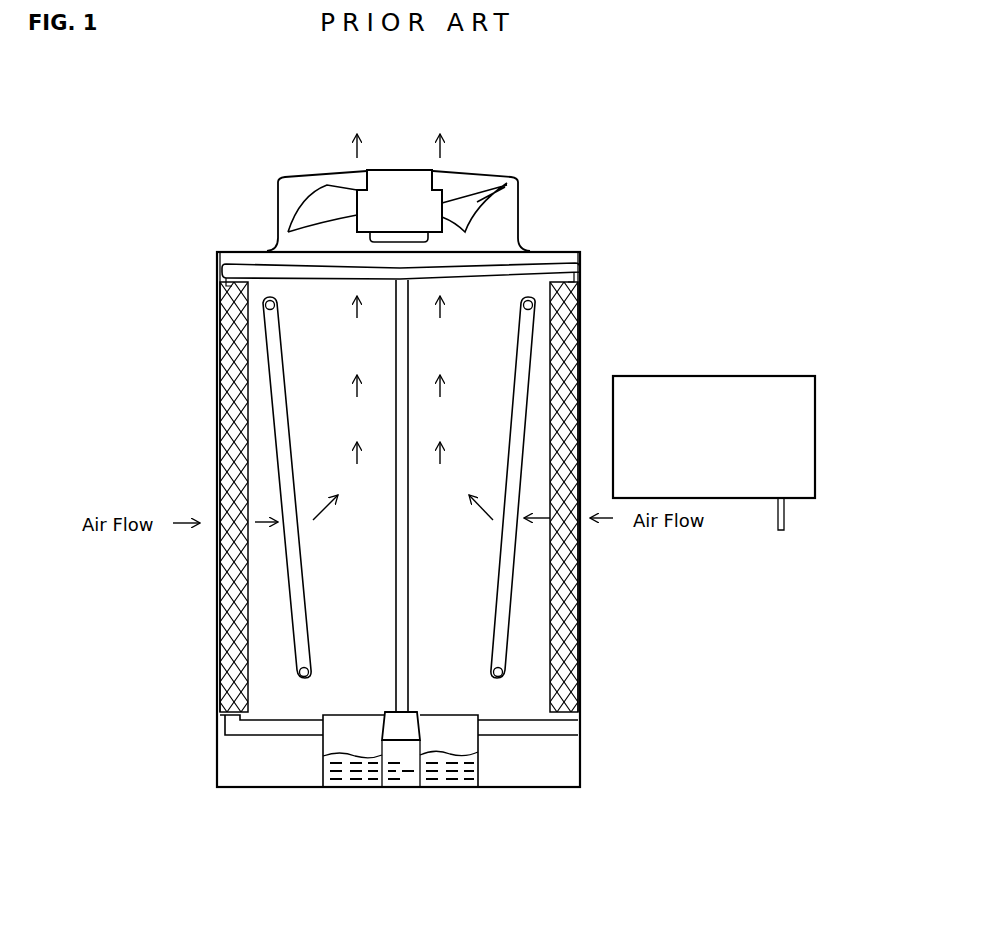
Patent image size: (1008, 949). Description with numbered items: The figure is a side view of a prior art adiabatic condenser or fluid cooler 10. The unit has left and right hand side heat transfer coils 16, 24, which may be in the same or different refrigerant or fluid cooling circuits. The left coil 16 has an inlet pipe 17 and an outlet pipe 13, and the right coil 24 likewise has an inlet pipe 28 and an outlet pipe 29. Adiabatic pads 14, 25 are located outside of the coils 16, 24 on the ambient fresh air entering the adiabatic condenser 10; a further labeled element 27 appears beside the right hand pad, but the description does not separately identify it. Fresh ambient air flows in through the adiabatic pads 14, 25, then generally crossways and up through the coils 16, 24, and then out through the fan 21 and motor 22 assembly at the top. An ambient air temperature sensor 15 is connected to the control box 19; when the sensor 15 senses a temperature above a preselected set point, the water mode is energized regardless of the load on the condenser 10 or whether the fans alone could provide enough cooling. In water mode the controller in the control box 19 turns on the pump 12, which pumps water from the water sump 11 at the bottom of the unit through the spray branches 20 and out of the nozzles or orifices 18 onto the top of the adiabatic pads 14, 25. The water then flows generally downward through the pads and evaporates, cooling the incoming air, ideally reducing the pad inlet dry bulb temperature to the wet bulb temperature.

The adiabatic condenser or fluid cooler 10 is at (200, 247).
The water sump 11 is at (368, 787).
The pump 12 is at (402, 772).
The outlet pipe 13 is at (300, 668).
The adiabatic pad 14 is at (583, 622).
The ambient air temperature sensor 15 is at (786, 525).
The heat transfer coil 16 is at (272, 397).
The inlet pipe 17 is at (266, 303).
The nozzles or orifices 18 is at (579, 273).
The control box 19 is at (757, 376).
The spray branches 20 is at (568, 265).
The fan 21 is at (478, 202).
The motor 22 is at (399, 177).
The heat transfer coil 24 is at (510, 549).
The adiabatic pad 25 is at (238, 578).
The right evaporative media pad 27 is at (598, 492).
The inlet pipe 28 is at (533, 306).
The outlet pipe 29 is at (501, 675).